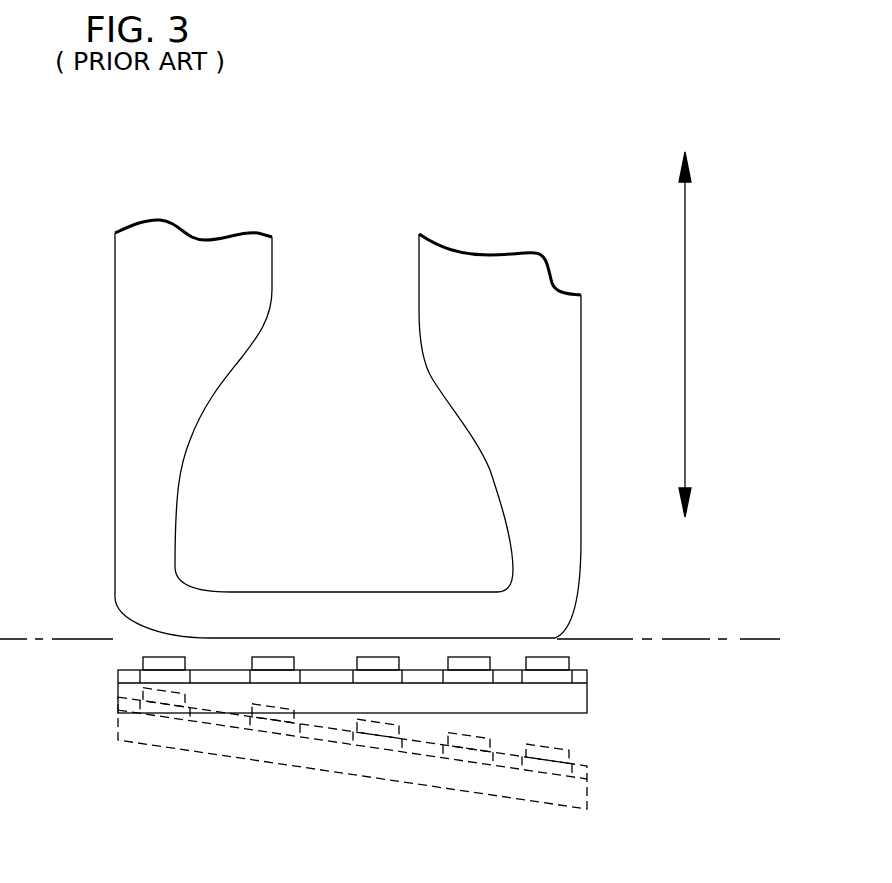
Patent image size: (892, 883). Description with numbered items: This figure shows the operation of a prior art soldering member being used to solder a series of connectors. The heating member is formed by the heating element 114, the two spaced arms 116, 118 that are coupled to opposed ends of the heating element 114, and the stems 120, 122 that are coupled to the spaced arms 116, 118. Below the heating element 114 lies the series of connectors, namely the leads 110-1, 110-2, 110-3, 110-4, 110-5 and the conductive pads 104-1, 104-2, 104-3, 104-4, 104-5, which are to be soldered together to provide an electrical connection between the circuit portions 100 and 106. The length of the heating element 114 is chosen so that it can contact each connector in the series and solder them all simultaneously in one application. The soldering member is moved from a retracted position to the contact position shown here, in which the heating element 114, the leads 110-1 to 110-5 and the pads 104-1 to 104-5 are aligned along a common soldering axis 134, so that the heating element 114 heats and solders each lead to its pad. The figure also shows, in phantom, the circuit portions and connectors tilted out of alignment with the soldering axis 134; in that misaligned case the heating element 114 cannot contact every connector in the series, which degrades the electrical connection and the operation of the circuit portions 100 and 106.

The circuit portion 100 is at (600, 717).
The conductive pad 104-1 is at (159, 677).
The conductive pad 104-2 is at (272, 677).
The conductive pad 104-3 is at (365, 680).
The conductive pad 104-4 is at (467, 680).
The conductive pad 104-5 is at (545, 680).
The circuit portion 106 is at (583, 678).
The lead 110-1 is at (157, 662).
The lead 110-2 is at (267, 650).
The lead 110-3 is at (375, 657).
The lead 110-4 is at (478, 657).
The lead 110-5 is at (560, 648).
The heating element 114 is at (295, 610).
The spaced arm 116 is at (128, 510).
The spaced arm 118 is at (552, 480).
The stem 120 is at (170, 267).
The stem 122 is at (476, 280).
The soldering axis 134 is at (742, 639).